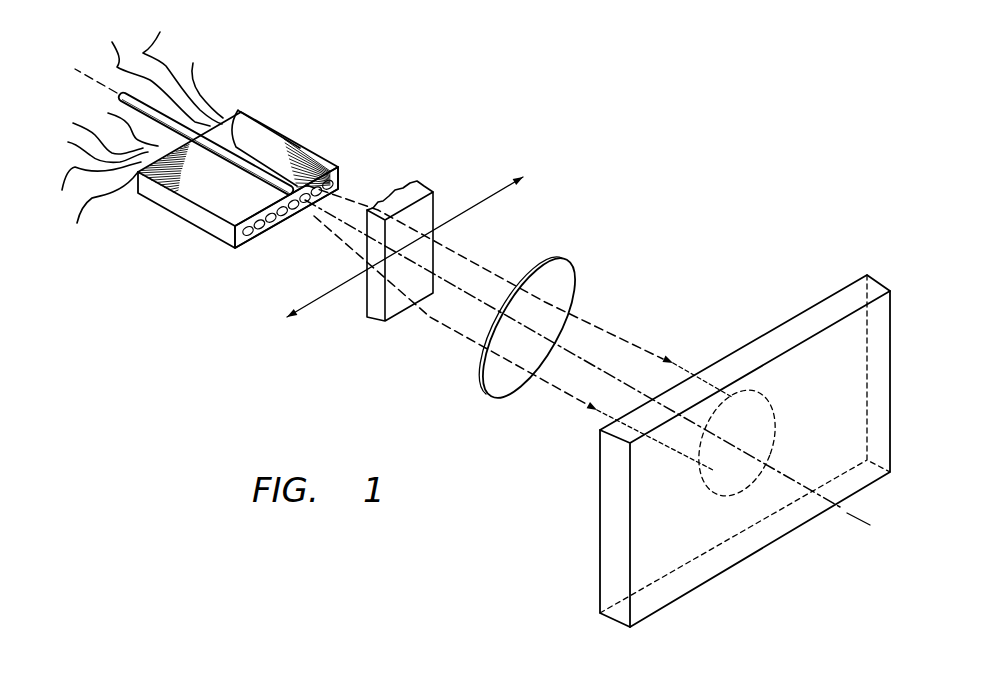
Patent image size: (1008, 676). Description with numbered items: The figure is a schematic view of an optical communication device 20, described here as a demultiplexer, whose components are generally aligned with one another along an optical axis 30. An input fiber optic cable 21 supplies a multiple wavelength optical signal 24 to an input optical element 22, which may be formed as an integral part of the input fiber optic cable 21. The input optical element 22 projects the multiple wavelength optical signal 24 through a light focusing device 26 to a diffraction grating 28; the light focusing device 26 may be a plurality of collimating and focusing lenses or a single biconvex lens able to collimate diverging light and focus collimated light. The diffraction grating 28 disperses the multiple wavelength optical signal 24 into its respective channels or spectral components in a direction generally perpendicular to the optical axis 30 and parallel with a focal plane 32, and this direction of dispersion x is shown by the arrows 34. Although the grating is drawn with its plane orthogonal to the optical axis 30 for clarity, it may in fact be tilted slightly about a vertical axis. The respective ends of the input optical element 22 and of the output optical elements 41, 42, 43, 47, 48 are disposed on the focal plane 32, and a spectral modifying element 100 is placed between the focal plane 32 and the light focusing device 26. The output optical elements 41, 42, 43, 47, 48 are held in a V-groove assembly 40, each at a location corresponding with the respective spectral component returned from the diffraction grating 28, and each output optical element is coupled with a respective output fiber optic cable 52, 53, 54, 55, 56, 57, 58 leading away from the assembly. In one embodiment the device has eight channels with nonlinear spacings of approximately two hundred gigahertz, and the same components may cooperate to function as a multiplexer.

The communication device 20 is at (350, 410).
The input fiber optic cable 21 is at (119, 96).
The input optical element 22 is at (262, 126).
The multiple wavelength optical signal 24 is at (618, 332).
The light focusing device 26 is at (553, 257).
The diffraction grating 28 is at (797, 314).
The optical axis 30 is at (845, 515).
The focal plane 32 is at (298, 192).
The arrows 34 is at (497, 192).
The V-groove assembly 40 is at (174, 222).
The output optical element 41 is at (253, 247).
The output optical element 42 is at (267, 243).
The output optical element 43 is at (277, 222).
The output optical element 47 is at (329, 199).
The output optical element 48 is at (345, 174).
The output fiber optic cable 52 is at (90, 192).
The output fiber optic cable 53 is at (94, 147).
The output fiber optic cable 54 is at (95, 130).
The output fiber optic cable 55 is at (120, 123).
The output fiber optic cable 56 is at (156, 71).
The output fiber optic cable 57 is at (182, 65).
The output fiber optic cable 58 is at (203, 78).
The spectral modifying element 100 is at (423, 187).